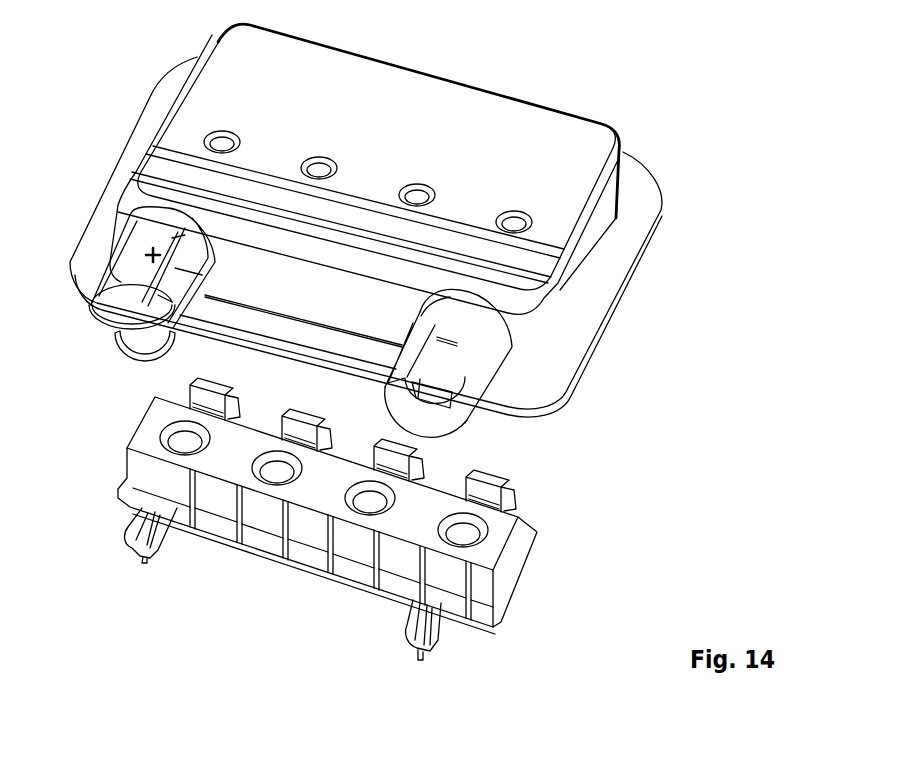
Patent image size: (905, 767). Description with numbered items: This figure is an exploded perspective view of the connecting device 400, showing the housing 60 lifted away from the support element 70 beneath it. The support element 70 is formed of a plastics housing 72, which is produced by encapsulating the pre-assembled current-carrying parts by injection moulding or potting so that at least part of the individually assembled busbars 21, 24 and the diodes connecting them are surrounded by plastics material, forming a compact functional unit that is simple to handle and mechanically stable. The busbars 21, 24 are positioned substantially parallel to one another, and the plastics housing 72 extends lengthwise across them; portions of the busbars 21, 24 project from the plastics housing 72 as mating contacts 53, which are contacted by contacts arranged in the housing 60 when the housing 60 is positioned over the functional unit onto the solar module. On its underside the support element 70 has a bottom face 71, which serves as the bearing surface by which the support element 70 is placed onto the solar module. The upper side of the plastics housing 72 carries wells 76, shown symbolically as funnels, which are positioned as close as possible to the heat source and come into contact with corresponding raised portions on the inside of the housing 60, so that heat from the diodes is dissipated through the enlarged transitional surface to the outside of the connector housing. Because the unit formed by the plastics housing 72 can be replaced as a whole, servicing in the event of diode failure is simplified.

The connecting device 400 is at (641, 43).
The housing 60 is at (412, 98).
The busbar 21 is at (236, 421).
The well 76 is at (184, 432).
The mating contact 53 is at (128, 541).
The busbar 24 is at (518, 512).
The plastics housing 72 is at (490, 548).
The support element 70 is at (507, 597).
The bottom face 71 is at (338, 600).